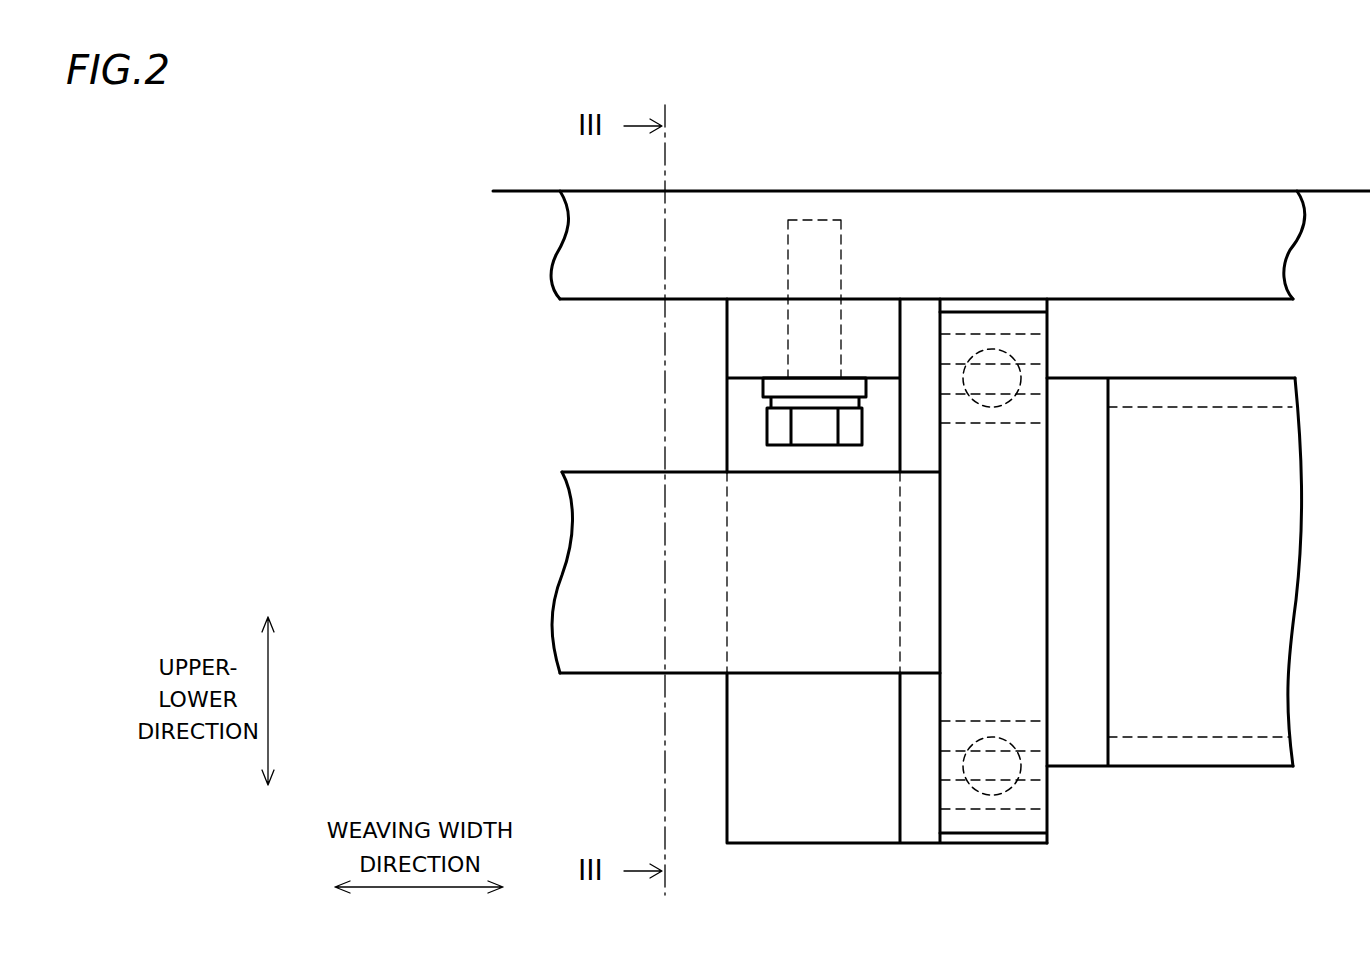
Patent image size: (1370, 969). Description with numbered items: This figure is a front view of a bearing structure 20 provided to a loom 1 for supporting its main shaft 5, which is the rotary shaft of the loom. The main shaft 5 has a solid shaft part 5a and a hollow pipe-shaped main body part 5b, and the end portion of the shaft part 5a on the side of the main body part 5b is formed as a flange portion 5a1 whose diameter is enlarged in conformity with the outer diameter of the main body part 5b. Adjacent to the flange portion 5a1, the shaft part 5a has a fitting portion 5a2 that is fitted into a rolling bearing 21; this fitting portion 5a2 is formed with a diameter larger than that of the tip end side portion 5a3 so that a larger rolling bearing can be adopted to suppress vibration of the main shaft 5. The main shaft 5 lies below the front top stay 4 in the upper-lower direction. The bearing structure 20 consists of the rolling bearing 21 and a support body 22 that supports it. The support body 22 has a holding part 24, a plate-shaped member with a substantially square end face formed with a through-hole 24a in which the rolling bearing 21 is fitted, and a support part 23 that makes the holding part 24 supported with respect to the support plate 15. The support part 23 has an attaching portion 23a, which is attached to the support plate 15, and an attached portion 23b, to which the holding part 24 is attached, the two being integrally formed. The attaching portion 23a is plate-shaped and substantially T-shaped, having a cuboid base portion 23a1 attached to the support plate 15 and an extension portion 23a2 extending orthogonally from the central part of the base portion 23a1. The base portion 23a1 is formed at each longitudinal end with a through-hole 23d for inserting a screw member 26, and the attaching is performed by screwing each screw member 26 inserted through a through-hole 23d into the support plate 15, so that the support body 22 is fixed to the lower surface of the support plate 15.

The loom 1 is at (392, 766).
The front top stay 4 is at (522, 192).
The main shaft 5 is at (1303, 340).
The shaft part 5a is at (786, 692).
The flange portion 5a1 is at (1077, 766).
The fitting portion 5a2 is at (955, 735).
The tip end side portion 5a3 is at (585, 667).
The main body part 5b is at (1228, 766).
The support plate 15 is at (1212, 290).
The bearing structure 20 is at (1096, 826).
The rolling bearing 21 is at (938, 796).
The support body 22 is at (1092, 597).
The support part 23 is at (696, 711).
The attaching portion 23a is at (710, 455).
The base portion 23a1 is at (733, 338).
The extension portion 23a2 is at (740, 796).
The attached portion 23b is at (917, 318).
The through-hole 23d is at (838, 333).
The holding part 24 is at (1035, 472).
The through-hole 24a is at (1004, 795).
The screw member 26 is at (760, 427).